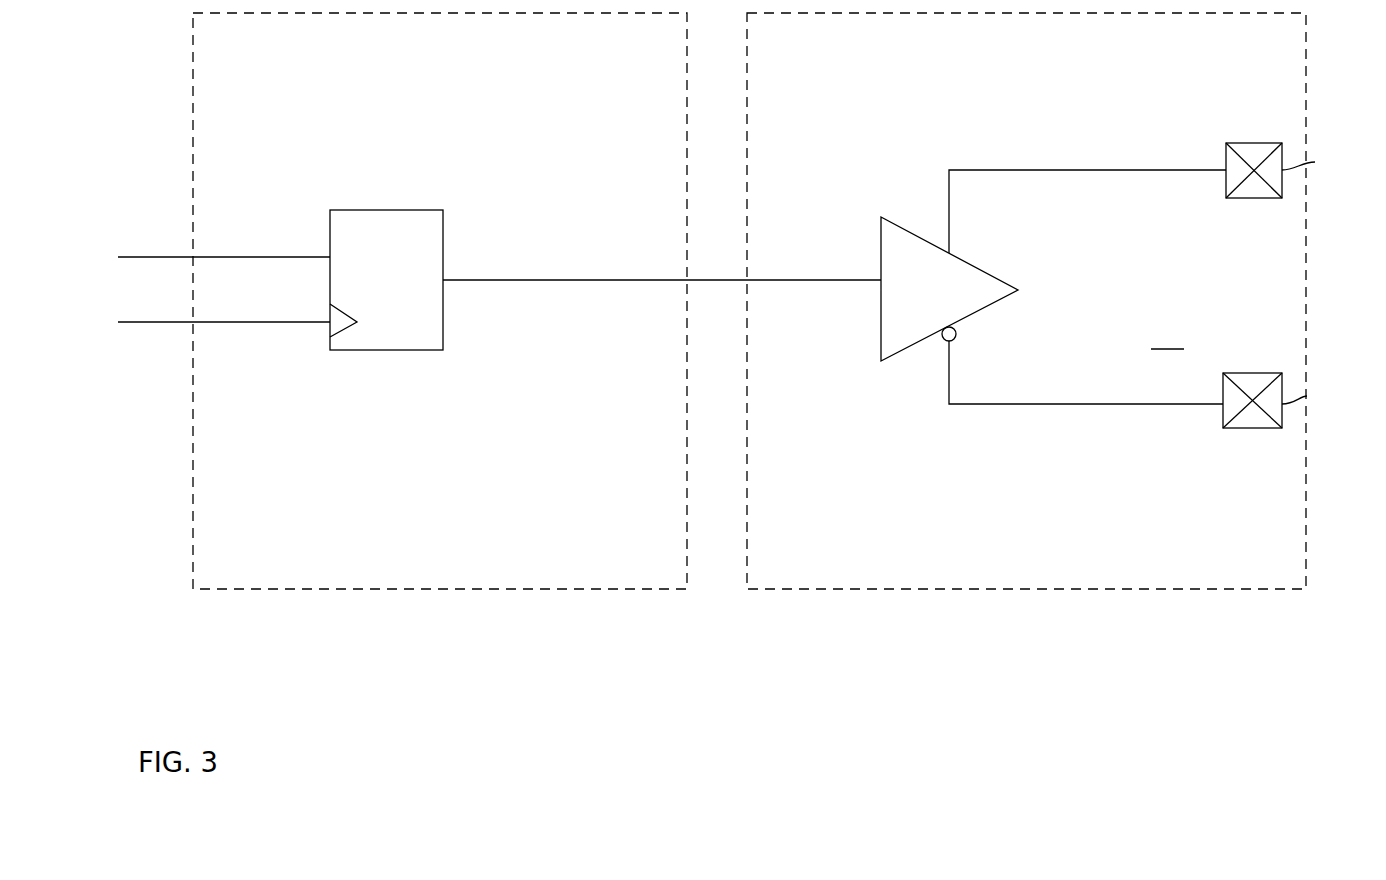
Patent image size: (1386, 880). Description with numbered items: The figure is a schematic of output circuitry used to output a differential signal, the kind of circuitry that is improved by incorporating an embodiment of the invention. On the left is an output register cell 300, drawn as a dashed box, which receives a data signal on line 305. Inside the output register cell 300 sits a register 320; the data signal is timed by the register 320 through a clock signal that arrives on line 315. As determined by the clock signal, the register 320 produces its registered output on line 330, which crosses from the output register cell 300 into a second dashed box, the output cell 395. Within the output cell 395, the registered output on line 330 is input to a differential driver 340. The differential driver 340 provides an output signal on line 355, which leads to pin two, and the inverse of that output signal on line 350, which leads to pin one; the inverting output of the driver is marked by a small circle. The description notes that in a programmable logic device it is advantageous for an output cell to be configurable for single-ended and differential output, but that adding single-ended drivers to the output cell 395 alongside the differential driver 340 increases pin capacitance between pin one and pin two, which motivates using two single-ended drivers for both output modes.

The output register cell 300 is at (440, 301).
The output cell 395 is at (1026, 301).
The line 305 is at (157, 256).
The line 315 is at (118, 323).
The register 320 is at (386, 280).
The line 330 is at (584, 280).
The differential driver 340 is at (881, 216).
The line 350 is at (1062, 404).
The line 355 is at (1082, 170).